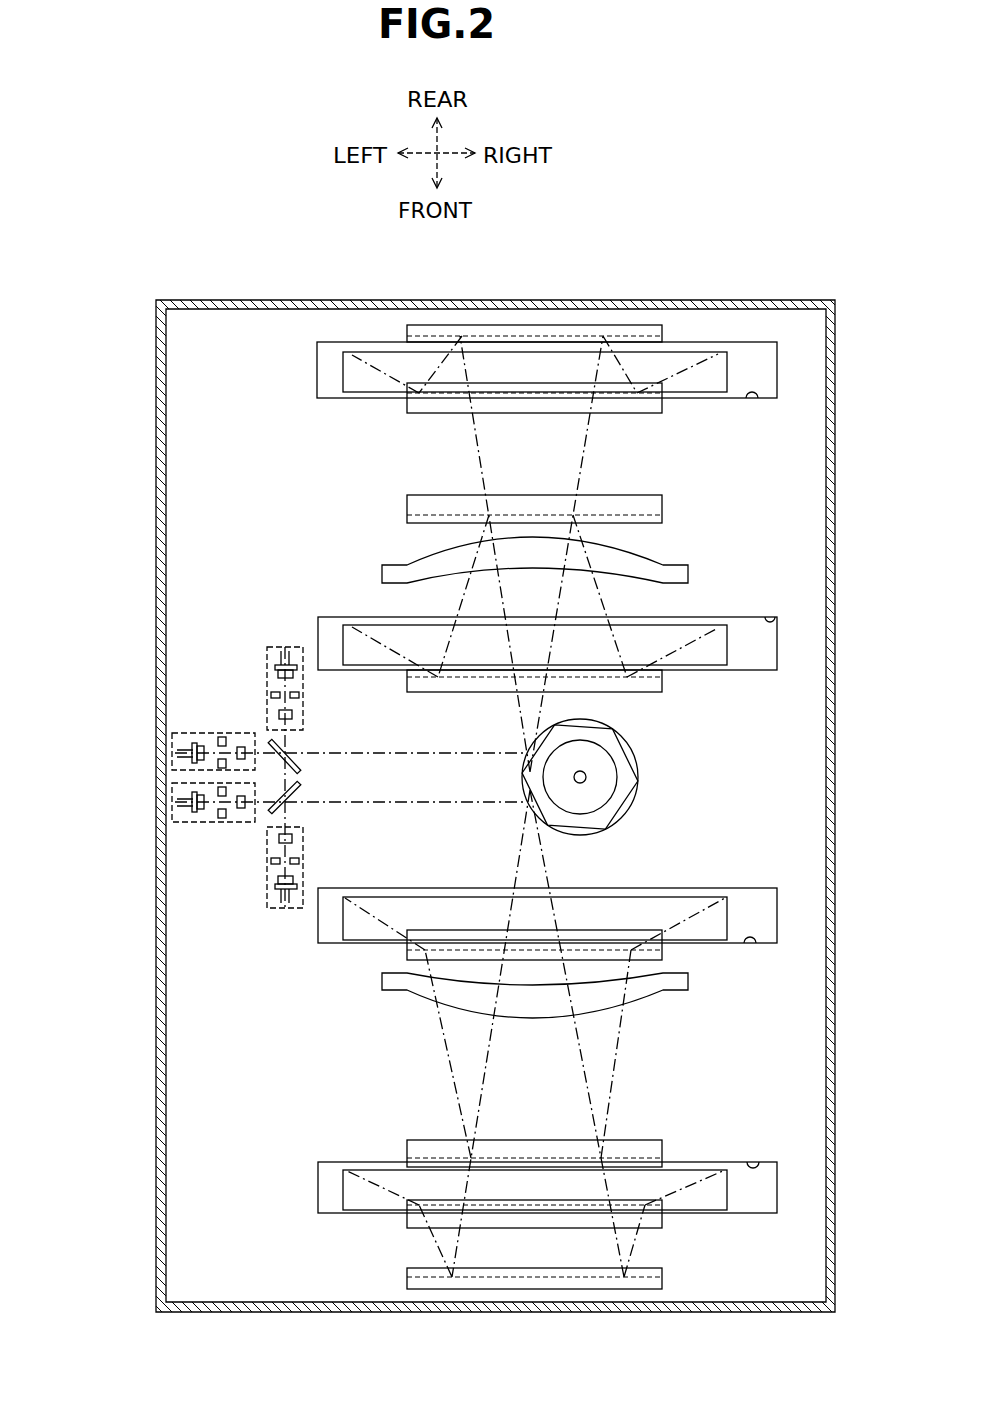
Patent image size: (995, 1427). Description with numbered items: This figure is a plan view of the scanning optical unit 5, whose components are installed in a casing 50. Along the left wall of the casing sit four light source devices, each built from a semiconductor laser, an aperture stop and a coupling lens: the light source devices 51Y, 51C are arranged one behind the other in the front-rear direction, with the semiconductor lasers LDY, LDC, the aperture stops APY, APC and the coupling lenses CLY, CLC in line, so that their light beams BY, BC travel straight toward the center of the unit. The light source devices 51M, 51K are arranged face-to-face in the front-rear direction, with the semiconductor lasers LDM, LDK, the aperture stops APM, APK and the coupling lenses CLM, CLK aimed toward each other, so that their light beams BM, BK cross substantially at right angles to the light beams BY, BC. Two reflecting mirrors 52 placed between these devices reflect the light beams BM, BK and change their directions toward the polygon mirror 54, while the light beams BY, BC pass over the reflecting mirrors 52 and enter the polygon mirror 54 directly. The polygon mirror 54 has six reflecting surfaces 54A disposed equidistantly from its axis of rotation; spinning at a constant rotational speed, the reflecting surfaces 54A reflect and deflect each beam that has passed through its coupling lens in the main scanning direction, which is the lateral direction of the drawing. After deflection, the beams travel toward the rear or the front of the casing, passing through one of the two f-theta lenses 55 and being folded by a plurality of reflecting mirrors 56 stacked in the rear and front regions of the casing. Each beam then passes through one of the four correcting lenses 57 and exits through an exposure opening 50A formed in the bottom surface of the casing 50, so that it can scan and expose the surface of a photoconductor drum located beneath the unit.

The scanning optical unit 5 is at (184, 221).
The casing 50 is at (240, 296).
The exposure opening 50A is at (752, 397).
The light source device 51K is at (286, 643).
The light source device 51C is at (170, 745).
The light source device 51Y is at (170, 813).
The light source device 51M is at (286, 912).
The reflecting mirror 52 is at (299, 784).
The polygon mirror 54 is at (639, 762).
The reflecting surface 54A is at (537, 822).
The f-theta lens 55 is at (688, 570).
The reflecting mirror 56 is at (427, 324).
The correcting lens 57 is at (721, 360).
The semiconductor laser LDK is at (277, 668).
The semiconductor laser LDC is at (178, 752).
The semiconductor laser LDY is at (178, 801).
The semiconductor laser LDM is at (277, 889).
The aperture stop APK is at (300, 695).
The aperture stop APC is at (220, 737).
The aperture stop APY is at (222, 817).
The aperture stop APM is at (300, 862).
The coupling lens CLK is at (293, 714).
The coupling lens CLC is at (240, 746).
The coupling lens CLY is at (241, 810).
The coupling lens CLM is at (298, 840).
The light beam BK is at (590, 447).
The light beam BC is at (572, 590).
The light beam BM is at (592, 1093).
The light beam BY is at (620, 1245).